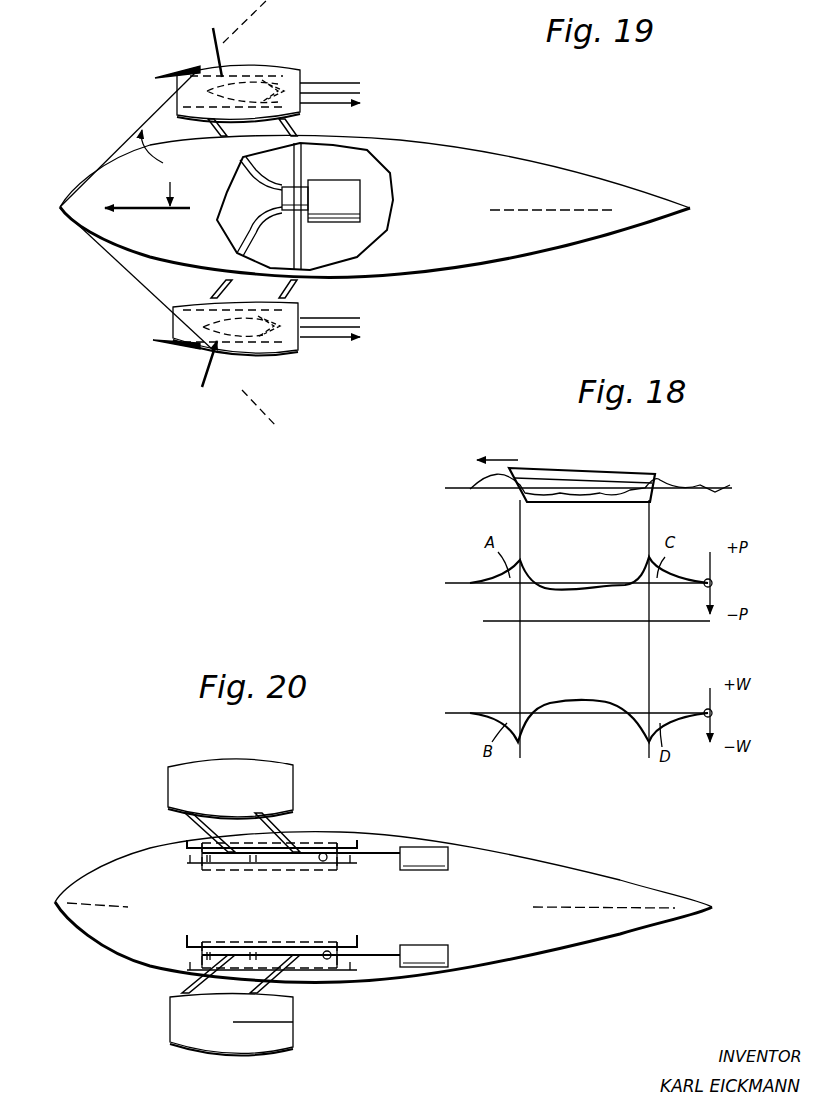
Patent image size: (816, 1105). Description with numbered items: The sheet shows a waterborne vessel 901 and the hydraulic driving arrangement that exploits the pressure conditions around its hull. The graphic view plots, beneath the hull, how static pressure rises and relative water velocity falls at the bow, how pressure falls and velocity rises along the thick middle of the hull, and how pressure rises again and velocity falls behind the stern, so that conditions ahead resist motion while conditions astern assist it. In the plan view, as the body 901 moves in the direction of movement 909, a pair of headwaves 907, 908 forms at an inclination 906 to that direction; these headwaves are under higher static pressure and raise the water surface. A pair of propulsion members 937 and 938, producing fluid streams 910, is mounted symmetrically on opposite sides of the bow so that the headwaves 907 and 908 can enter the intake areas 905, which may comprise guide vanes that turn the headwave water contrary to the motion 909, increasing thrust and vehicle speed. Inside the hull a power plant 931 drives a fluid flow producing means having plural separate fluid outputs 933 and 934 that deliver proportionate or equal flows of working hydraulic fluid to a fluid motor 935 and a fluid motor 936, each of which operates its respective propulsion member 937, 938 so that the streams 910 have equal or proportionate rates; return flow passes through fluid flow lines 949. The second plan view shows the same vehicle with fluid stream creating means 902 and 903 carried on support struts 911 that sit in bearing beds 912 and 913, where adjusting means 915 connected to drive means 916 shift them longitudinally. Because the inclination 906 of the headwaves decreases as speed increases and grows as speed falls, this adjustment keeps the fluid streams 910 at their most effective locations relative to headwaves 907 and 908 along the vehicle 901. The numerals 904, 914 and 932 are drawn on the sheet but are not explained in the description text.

In FIG. 19, the vessel 901 is at (511, 170).
In FIG. 18, the vessel 901 is at (560, 482).
In FIG. 20, the vessel 901 is at (550, 868).
In FIG. 19, the fluid stream creating means 902 is at (232, 65).
In FIG. 20, the fluid stream creating means 902 is at (257, 775).
In FIG. 19, the fluid stream creating means 903 is at (232, 358).
In FIG. 20, the fluid stream creating means 903 is at (255, 1040).
In FIG. 19, the thrust direction arrow 904 is at (228, 213).
In FIG. 19, the intake areas 905 is at (170, 72).
In FIG. 19, the inclination 906 is at (167, 175).
In FIG. 19, the headwave 907 is at (117, 148).
In FIG. 19, the headwave 908 is at (127, 278).
In FIG. 19, the direction of movement 909 is at (140, 209).
In FIG. 20, the direction of movement 909 is at (90, 886).
In FIG. 19, the fluid streams 910 is at (333, 97).
In FIG. 19, the support struts 911 is at (290, 128).
In FIG. 20, the support struts 911 is at (200, 824).
In FIG. 20, the bearing bed 912 is at (190, 866).
In FIG. 20, the bearing bed 913 is at (190, 944).
In FIG. 20, the slide carriage 914 is at (248, 865).
In FIG. 20, the adjusting means 915 is at (387, 860).
In FIG. 20, the drive means 916 is at (432, 858).
In FIG. 19, the power plant 931 is at (350, 210).
In FIG. 19, the pump unit 932 is at (296, 198).
In FIG. 19, the fluid output 933 is at (250, 167).
In FIG. 19, the fluid output 934 is at (250, 242).
In FIG. 19, the fluid motor 935 is at (245, 92).
In FIG. 19, the fluid motor 936 is at (243, 347).
In FIG. 19, the propulsion member 937 is at (297, 76).
In FIG. 19, the propulsion member 938 is at (273, 348).
In FIG. 19, the fluid flow lines 949 is at (303, 158).